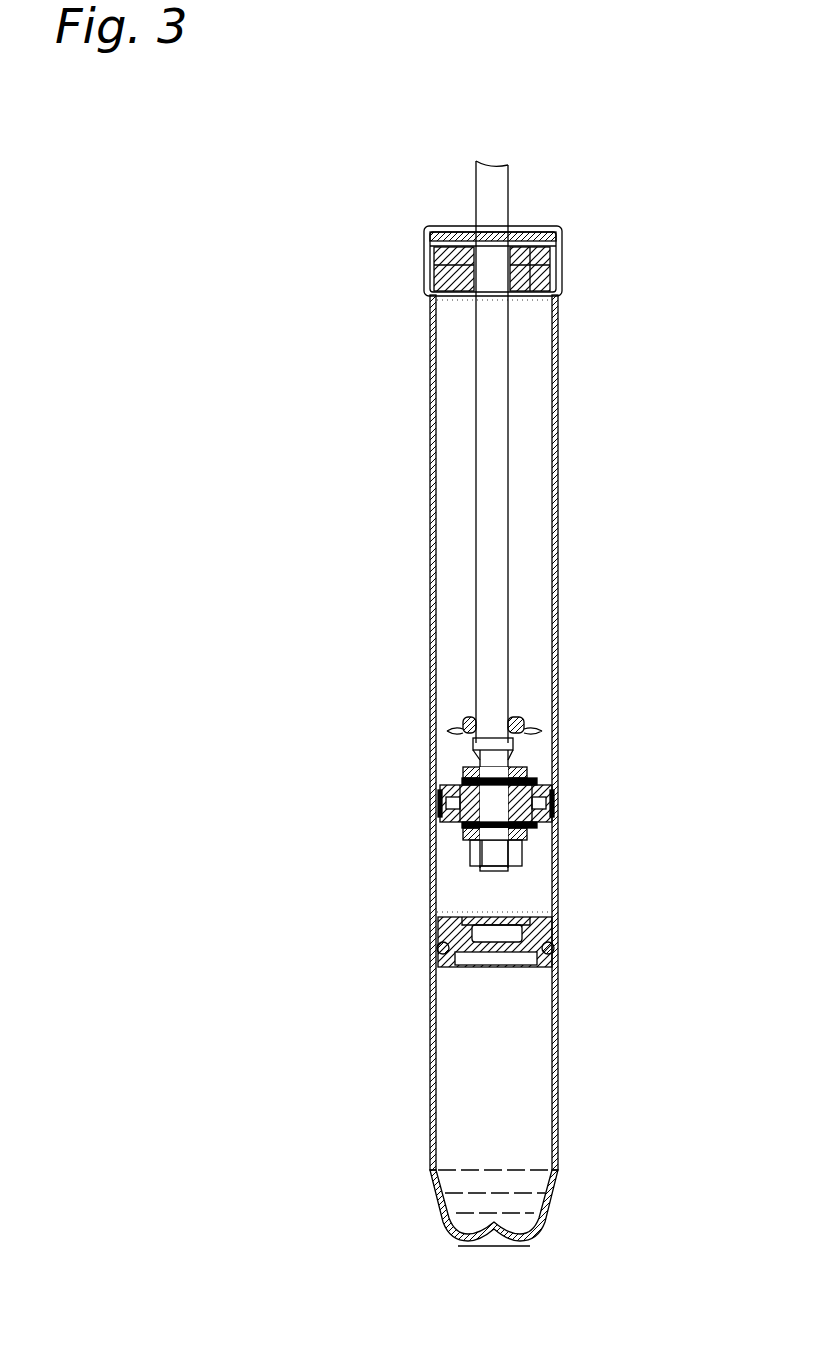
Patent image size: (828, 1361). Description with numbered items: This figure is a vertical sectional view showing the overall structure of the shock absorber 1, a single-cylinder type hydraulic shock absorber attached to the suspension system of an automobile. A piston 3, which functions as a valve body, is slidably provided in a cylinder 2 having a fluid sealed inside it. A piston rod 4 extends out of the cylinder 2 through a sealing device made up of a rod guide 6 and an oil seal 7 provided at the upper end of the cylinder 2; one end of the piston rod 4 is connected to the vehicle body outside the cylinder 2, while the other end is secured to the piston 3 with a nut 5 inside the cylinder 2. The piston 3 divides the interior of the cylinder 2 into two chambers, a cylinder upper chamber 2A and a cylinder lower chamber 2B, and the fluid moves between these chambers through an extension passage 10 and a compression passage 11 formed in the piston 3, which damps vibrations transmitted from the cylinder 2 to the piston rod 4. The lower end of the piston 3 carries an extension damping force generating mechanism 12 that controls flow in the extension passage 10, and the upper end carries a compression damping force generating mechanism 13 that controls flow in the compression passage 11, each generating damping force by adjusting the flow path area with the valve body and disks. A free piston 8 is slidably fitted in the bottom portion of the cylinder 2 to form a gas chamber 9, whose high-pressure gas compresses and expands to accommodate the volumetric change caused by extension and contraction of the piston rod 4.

The shock absorber 1 is at (335, 1263).
The cylinder 2 is at (557, 378).
The cylinder upper chamber 2A is at (533, 470).
The cylinder lower chamber 2B is at (530, 885).
The piston 3 is at (552, 787).
The piston rod 4 is at (476, 198).
The nut 5 is at (460, 858).
The rod guide 6 is at (552, 263).
The oil seal 7 is at (513, 226).
The free piston 8 is at (436, 932).
The gas chamber 9 is at (452, 1048).
The extension passage 10 is at (437, 800).
The compression passage 11 is at (553, 808).
The extension damping force generating mechanism 12 is at (434, 838).
The compression damping force generating mechanism 13 is at (542, 772).